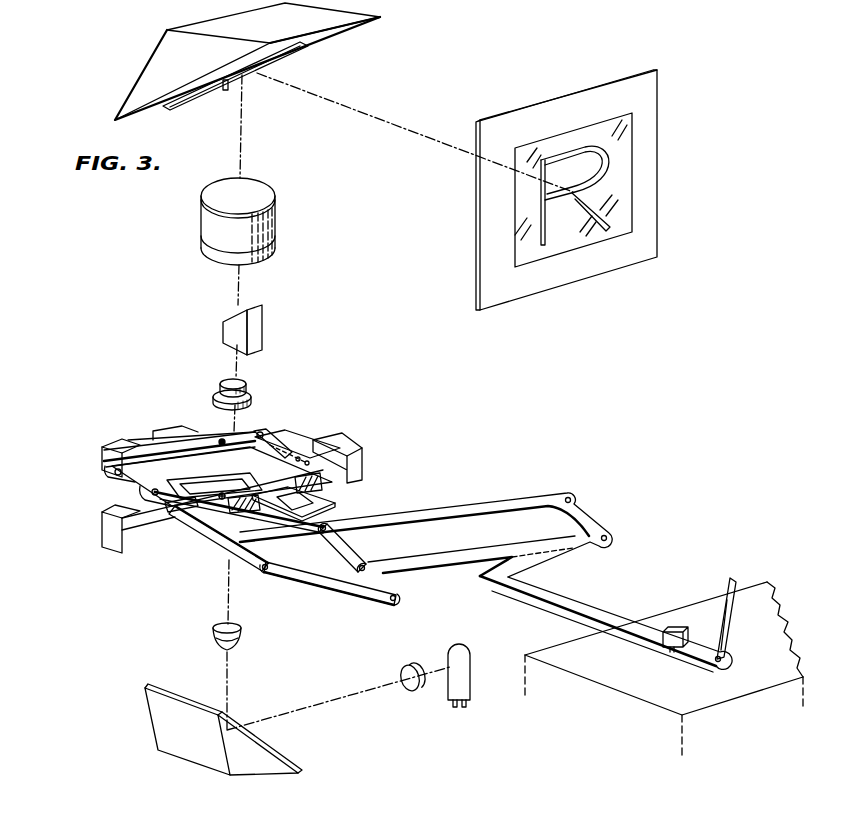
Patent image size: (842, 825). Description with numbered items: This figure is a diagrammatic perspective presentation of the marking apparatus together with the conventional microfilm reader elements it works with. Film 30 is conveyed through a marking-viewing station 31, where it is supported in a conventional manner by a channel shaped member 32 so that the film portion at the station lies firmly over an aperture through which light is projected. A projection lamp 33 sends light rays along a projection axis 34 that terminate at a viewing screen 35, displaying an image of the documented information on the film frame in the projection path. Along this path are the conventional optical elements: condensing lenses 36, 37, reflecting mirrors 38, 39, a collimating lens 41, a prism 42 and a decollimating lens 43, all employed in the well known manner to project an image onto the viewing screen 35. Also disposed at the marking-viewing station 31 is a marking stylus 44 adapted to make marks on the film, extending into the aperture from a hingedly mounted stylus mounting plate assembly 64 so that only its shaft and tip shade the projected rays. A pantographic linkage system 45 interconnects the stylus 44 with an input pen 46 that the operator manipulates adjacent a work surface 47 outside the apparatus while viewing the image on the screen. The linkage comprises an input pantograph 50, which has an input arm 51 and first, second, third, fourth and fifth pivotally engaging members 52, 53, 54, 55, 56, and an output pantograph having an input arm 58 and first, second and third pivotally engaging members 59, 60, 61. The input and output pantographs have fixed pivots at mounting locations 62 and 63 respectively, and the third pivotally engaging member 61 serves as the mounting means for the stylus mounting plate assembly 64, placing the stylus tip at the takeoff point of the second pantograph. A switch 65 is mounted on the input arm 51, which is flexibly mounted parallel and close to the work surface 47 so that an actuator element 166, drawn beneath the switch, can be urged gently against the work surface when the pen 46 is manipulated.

The film 30 is at (143, 438).
The marking-viewing station 31 is at (295, 433).
The channel shaped member 32 is at (103, 462).
The projection lamp 33 is at (460, 680).
The projection axis 34 is at (243, 133).
The viewing screen 35 is at (620, 193).
The condensing lens 36 is at (407, 693).
The condensing lens 37 is at (242, 632).
The reflecting mirror 38 is at (270, 760).
The reflecting mirror 39 is at (148, 82).
The collimating lens 41 is at (220, 383).
The prism 42 is at (222, 332).
The decollimating lens 43 is at (203, 230).
The marking stylus 44 is at (213, 507).
The pantographic linkage system 45 is at (486, 563).
The input pen 46 is at (737, 580).
The work surface 47 is at (628, 675).
The input pantograph 50 is at (497, 541).
The input arm 51 is at (585, 605).
The first pivotally engaging member 52 is at (508, 503).
The second pivotally engaging member 53 is at (457, 560).
The third pivotally engaging member 54 is at (298, 530).
The fourth pivotally engaging member 55 is at (250, 570).
The fifth pivotally engaging member 56 is at (350, 592).
The input arm 58 is at (222, 498).
The first pivotally engaging member 59 is at (185, 452).
The second pivotally engaging member 60 is at (265, 430).
The third pivotally engaging member 61 is at (318, 480).
The mounting location 62 is at (320, 532).
The mounting location 63 is at (222, 442).
The stylus mounting plate assembly 64 is at (192, 508).
The switch 65 is at (673, 626).
The pin 166 is at (670, 655).